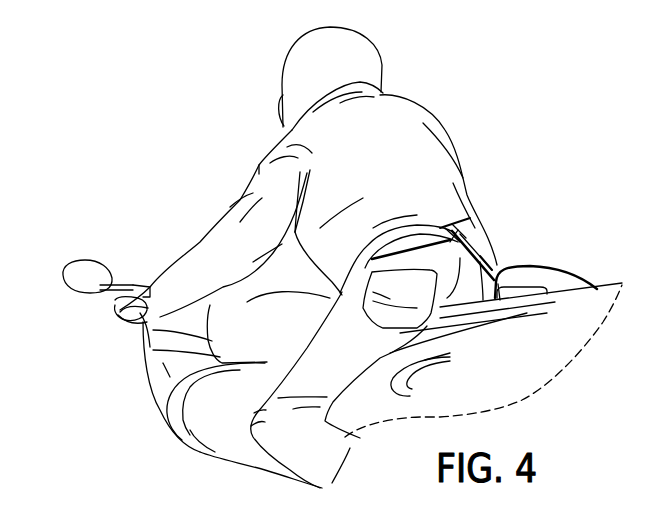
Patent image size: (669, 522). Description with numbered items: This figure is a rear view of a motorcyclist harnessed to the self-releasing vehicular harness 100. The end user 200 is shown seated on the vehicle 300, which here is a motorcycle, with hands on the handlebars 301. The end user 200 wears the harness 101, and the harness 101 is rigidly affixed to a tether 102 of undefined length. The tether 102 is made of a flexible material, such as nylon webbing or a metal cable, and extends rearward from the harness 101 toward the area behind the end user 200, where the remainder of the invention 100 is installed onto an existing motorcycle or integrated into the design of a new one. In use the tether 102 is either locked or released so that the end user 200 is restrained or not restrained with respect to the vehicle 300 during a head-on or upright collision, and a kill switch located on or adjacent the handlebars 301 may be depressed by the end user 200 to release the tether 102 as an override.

The self-releasing vehicular harness 100 is at (326, 254).
The harness 101 is at (457, 230).
The tether 102 is at (482, 257).
The end user 200 is at (417, 120).
The vehicle 300 is at (203, 428).
The handlebars 301 is at (120, 310).